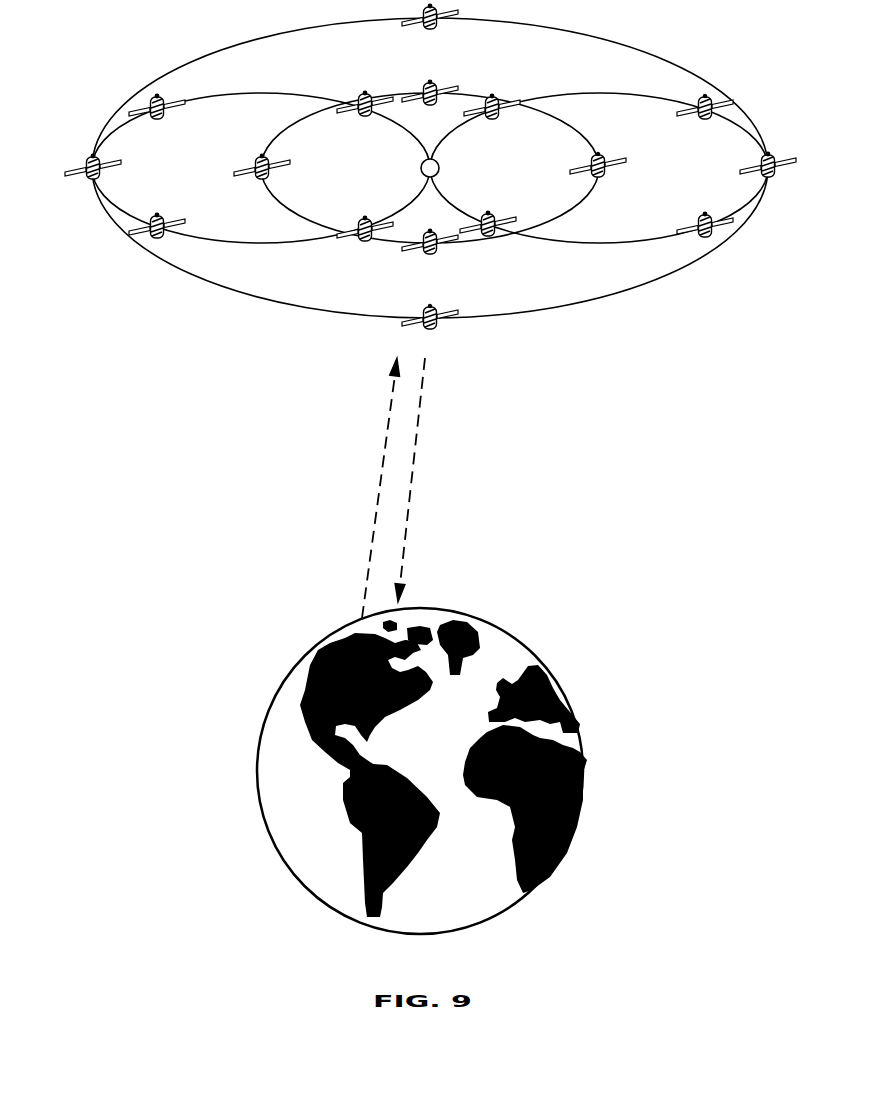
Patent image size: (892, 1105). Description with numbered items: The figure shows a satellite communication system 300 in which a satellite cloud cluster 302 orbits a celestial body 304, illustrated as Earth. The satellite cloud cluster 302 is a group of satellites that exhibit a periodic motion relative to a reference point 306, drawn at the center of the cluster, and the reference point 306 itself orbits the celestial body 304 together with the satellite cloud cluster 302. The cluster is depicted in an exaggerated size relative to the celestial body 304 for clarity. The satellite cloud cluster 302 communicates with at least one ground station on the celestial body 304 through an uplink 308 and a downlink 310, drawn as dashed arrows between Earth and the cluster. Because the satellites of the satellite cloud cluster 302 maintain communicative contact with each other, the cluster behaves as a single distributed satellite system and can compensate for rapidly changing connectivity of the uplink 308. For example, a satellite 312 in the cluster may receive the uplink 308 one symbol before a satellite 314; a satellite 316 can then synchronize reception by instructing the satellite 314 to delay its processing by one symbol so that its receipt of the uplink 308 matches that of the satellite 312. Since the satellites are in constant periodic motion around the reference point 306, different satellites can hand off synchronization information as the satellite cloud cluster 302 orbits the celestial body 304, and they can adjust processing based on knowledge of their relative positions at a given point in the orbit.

The satellite communication system 300 is at (438, 469).
The satellite cloud cluster 302 is at (708, 293).
The celestial body 304 is at (531, 649).
The reference point 306 is at (440, 156).
The uplink 308 is at (373, 532).
The downlink 310 is at (417, 452).
The satellite 312 is at (433, 330).
The satellite 314 is at (709, 96).
The satellite 316 is at (605, 154).